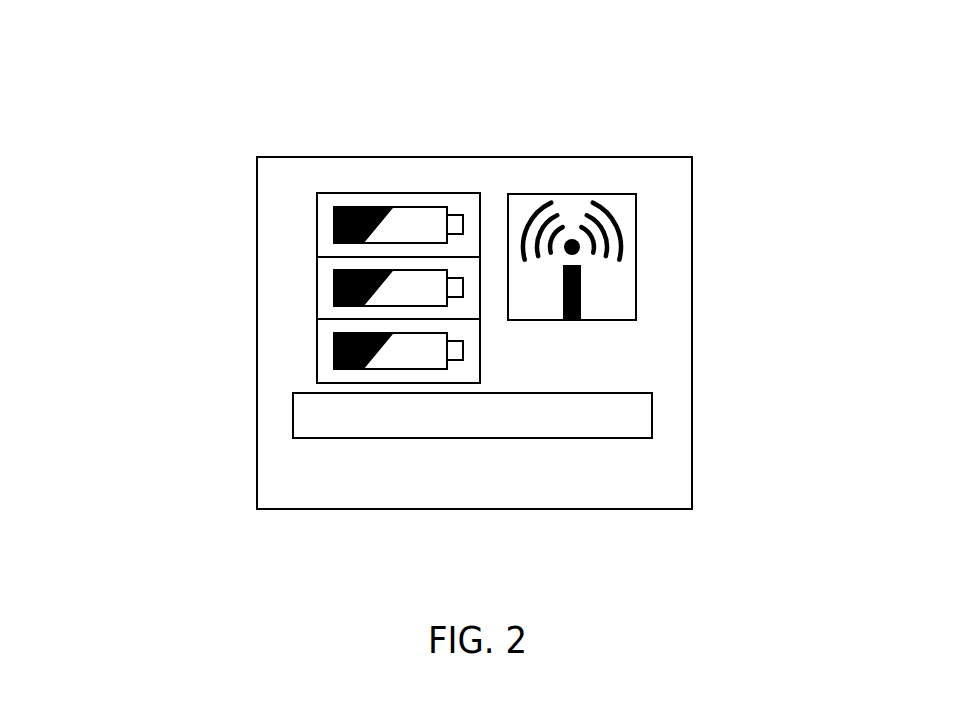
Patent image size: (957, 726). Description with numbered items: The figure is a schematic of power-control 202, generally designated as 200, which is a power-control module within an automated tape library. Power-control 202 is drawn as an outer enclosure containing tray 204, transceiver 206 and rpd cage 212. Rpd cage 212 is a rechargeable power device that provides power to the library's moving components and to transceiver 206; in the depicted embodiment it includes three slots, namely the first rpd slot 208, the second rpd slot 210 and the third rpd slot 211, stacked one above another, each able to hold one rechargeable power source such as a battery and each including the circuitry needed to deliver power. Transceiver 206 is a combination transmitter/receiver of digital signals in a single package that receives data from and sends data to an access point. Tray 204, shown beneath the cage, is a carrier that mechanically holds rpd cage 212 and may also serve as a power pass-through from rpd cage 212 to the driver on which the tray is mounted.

The schematic of power-control 200 is at (690, 63).
The power-control 202 is at (257, 474).
The tray 204 is at (458, 439).
The transceiver 206 is at (636, 268).
The rpd slot 1 208 is at (317, 217).
The rpd slot 2 210 is at (317, 288).
The rpd slot 3 211 is at (317, 357).
The rpd cage 212 is at (398, 193).